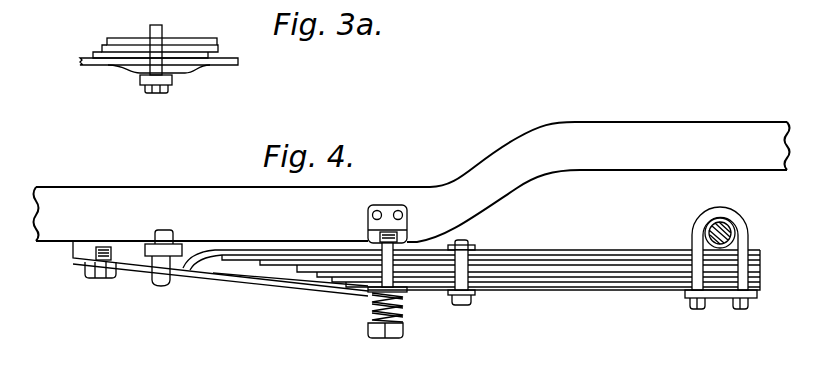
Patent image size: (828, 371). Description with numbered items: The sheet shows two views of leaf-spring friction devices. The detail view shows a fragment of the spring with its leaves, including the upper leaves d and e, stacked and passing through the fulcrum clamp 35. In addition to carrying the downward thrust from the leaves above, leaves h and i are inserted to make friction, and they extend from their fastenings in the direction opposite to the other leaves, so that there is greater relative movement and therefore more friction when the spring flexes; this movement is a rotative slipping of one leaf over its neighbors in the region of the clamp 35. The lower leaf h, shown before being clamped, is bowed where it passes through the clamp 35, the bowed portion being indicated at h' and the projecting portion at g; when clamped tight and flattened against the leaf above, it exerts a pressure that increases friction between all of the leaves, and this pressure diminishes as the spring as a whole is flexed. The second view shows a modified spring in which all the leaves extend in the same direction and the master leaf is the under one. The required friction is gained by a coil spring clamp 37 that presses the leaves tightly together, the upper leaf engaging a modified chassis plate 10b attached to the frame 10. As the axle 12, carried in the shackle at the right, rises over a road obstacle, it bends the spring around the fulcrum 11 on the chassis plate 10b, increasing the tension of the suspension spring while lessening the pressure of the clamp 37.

In FIG. 3A, the fulcrum clamp 35 is at (150, 30).
In FIG. 3A, the upper spring leaf d is at (184, 39).
In FIG. 3A, the second spring leaf e is at (221, 46).
In FIG. 3A, the leaf i is at (120, 56).
In FIG. 3A, the lower leaf h is at (137, 88).
In FIG. 3A, the projecting end of spring plate g is at (229, 66).
In FIG. 3A, the bowed portion h' is at (161, 96).
In FIG. 4, the vehicle frame 10 is at (547, 142).
In FIG. 4, the fulcrum 11 is at (340, 248).
In FIG. 4, the axle 12 is at (707, 235).
In FIG. 4, the chassis plate 10b is at (190, 252).
In FIG. 4, the spring clamp 37 is at (367, 290).